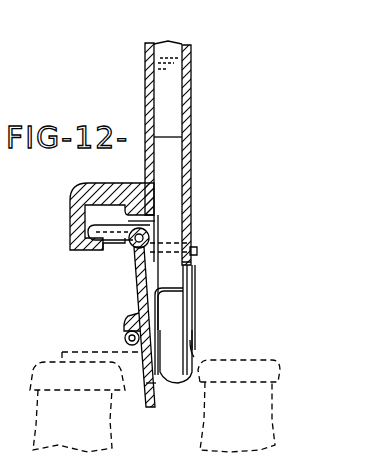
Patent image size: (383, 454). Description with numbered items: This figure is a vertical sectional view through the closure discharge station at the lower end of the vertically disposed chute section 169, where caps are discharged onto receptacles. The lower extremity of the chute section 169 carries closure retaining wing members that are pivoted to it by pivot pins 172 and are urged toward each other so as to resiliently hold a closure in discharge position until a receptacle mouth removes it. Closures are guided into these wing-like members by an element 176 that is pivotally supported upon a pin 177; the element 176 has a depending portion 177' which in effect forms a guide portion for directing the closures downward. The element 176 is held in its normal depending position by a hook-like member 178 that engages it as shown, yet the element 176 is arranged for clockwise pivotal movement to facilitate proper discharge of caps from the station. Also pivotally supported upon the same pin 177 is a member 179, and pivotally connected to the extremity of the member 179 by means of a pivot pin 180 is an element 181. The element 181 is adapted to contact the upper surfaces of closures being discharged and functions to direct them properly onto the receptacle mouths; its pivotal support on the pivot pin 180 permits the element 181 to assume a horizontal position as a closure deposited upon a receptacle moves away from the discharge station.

The chute section 169 is at (192, 103).
The pivot pins 172 is at (197, 246).
The element 176 is at (118, 250).
The pin 177 is at (185, 224).
The depending portion 177' is at (112, 327).
The hook-like member 178 is at (68, 225).
The member 179 is at (139, 310).
The pivot pin 180 is at (125, 340).
The element 181 is at (145, 405).